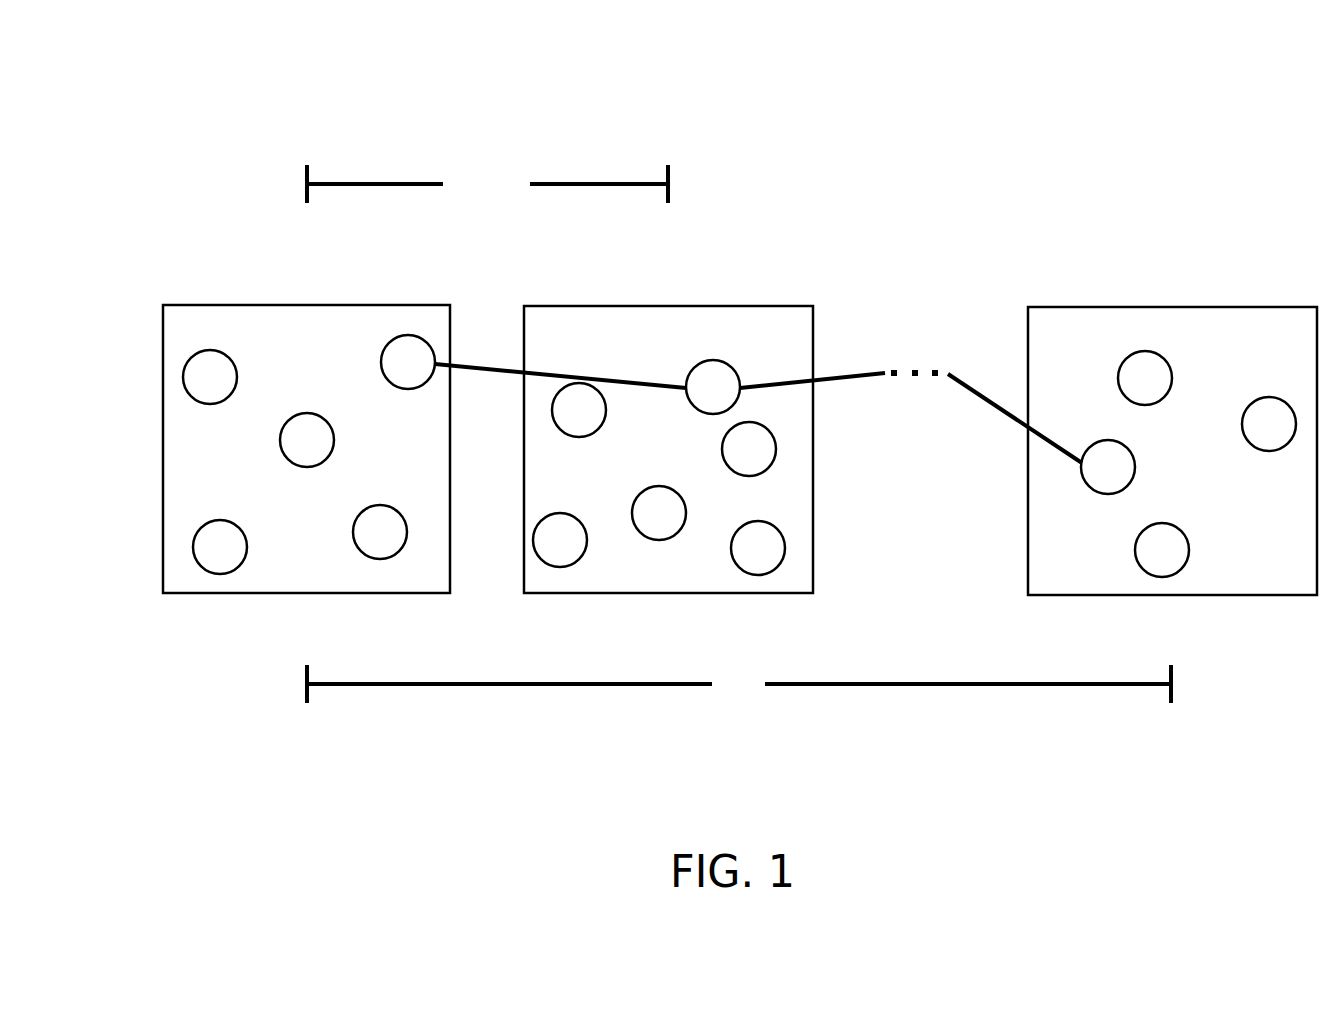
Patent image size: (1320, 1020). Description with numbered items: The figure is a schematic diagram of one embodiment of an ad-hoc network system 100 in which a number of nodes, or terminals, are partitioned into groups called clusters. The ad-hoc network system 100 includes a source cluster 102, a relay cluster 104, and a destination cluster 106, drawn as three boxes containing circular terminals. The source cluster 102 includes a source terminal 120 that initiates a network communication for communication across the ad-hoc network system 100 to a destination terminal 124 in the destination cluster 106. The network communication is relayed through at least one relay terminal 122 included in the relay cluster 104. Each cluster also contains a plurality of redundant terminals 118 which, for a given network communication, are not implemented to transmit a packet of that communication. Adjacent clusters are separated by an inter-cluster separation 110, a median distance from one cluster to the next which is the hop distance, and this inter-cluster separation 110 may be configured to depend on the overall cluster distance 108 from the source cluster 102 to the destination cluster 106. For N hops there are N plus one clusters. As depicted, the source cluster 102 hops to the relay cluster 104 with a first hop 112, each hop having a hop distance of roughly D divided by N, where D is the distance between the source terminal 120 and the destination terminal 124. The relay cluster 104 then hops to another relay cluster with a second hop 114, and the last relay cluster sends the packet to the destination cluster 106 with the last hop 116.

The ad-hoc network system 100 is at (212, 90).
The source cluster 102 is at (278, 444).
The relay cluster 104 is at (701, 427).
The destination cluster 106 is at (1133, 428).
The overall cluster distance 108 is at (737, 712).
The inter-cluster separation 110 is at (499, 148).
The first hop 112 is at (502, 367).
The second hop 114 is at (858, 373).
The last hop 116 is at (987, 397).
The redundant terminal 118 is at (218, 575).
The source terminal 120 is at (407, 335).
The relay terminal 122 is at (741, 395).
The destination terminal 124 is at (1088, 488).